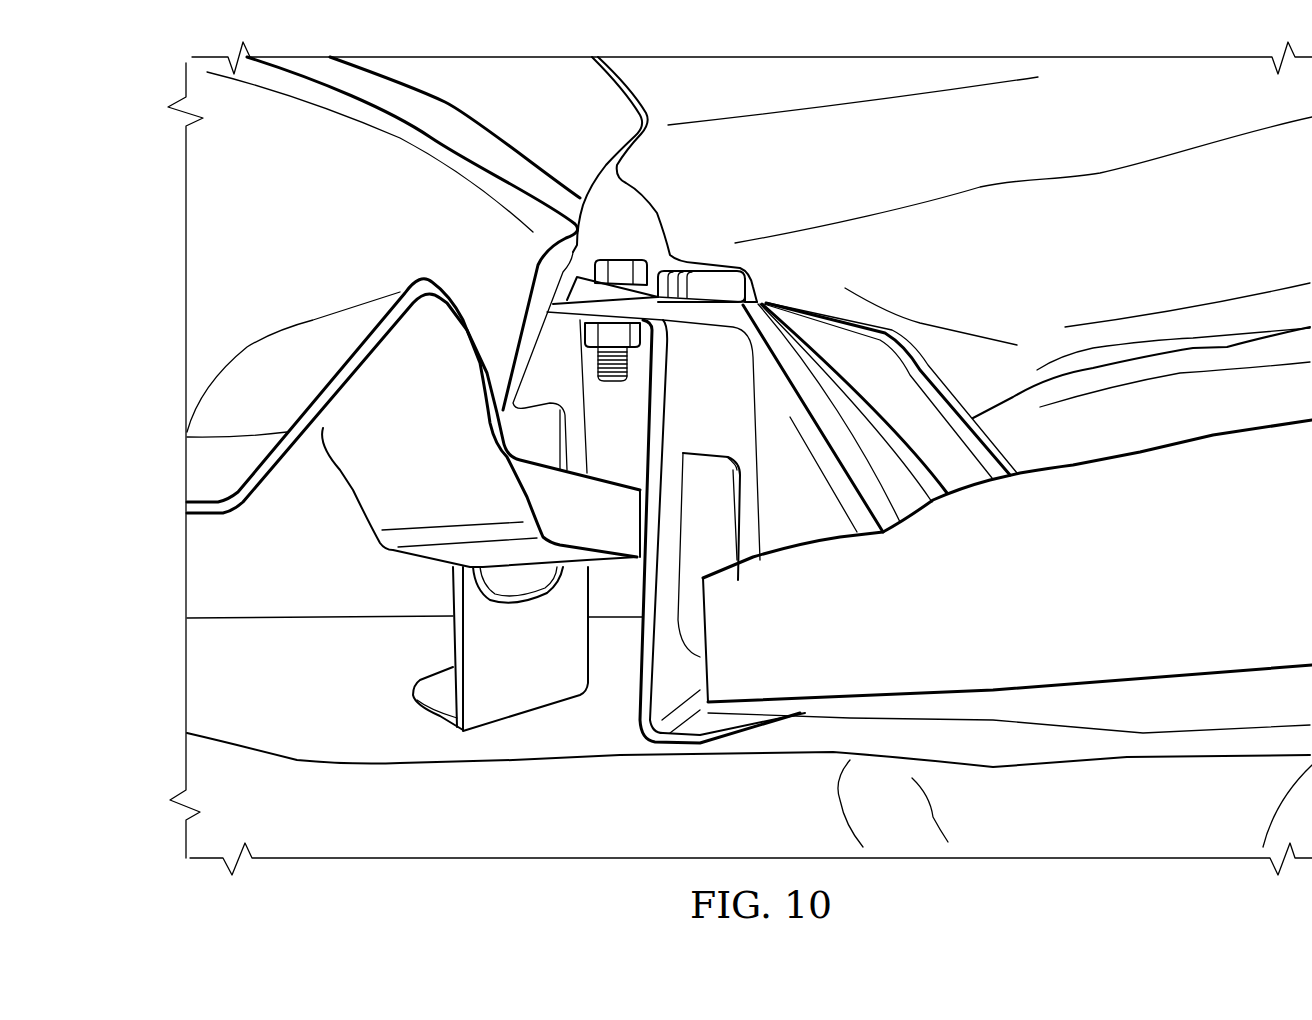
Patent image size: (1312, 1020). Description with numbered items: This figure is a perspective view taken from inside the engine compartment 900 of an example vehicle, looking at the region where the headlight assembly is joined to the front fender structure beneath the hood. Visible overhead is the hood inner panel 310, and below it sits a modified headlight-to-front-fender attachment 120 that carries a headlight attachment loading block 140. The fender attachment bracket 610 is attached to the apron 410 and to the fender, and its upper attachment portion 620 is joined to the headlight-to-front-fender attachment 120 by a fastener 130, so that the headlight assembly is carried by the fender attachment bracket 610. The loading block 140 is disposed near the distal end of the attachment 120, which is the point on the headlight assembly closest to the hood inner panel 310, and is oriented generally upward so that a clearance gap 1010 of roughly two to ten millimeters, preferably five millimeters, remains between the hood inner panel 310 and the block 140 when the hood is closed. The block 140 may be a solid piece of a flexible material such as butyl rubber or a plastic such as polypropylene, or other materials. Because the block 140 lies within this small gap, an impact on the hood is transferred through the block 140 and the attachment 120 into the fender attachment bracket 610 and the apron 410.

The engine compartment 900 is at (138, 227).
The hood inner panel 310 is at (933, 132).
The fastener 130 is at (623, 258).
The clearance gap 1010 is at (708, 268).
The headlight attachment loading block 140 is at (748, 289).
The upper attachment portion 620 is at (687, 327).
The headlight-to-front-fender attachment 120 is at (915, 412).
The fender attachment bracket 610 is at (453, 638).
The apron 410 is at (603, 760).